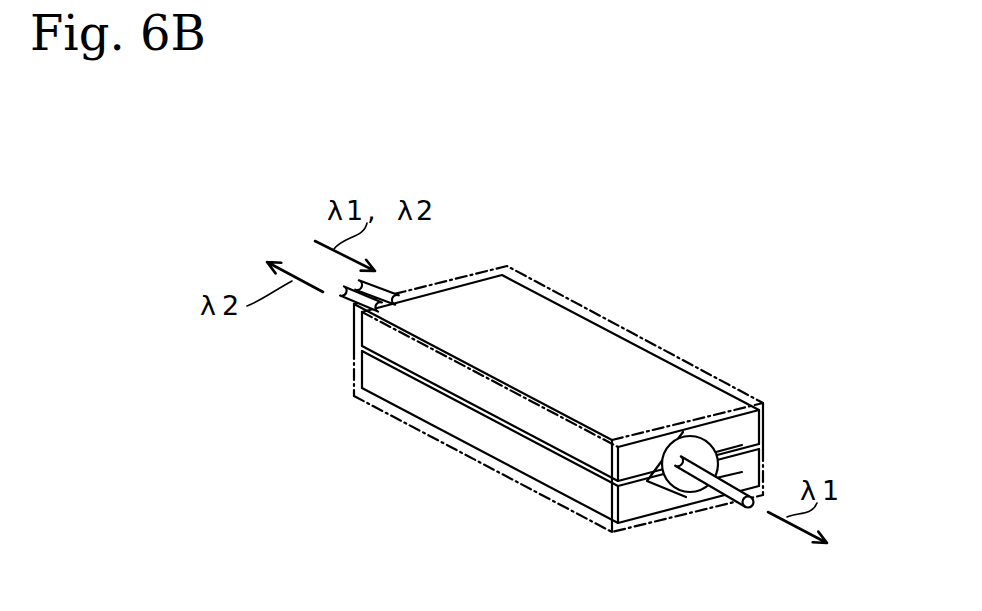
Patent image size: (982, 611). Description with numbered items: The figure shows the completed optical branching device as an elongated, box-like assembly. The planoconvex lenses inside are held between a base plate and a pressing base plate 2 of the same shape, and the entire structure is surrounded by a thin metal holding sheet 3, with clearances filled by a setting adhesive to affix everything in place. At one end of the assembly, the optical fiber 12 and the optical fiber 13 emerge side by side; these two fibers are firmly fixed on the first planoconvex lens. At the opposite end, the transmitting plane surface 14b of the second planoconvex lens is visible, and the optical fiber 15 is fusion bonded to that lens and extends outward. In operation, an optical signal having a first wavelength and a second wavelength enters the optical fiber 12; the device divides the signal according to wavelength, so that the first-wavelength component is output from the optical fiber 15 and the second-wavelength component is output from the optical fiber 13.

The pressing base plate 2 is at (597, 338).
The holding sheet 3 is at (521, 271).
The optical fiber 12 is at (377, 296).
The optical fiber 13 is at (347, 303).
The transmitting plane surface 14b is at (707, 447).
The optical fiber 15 is at (737, 483).